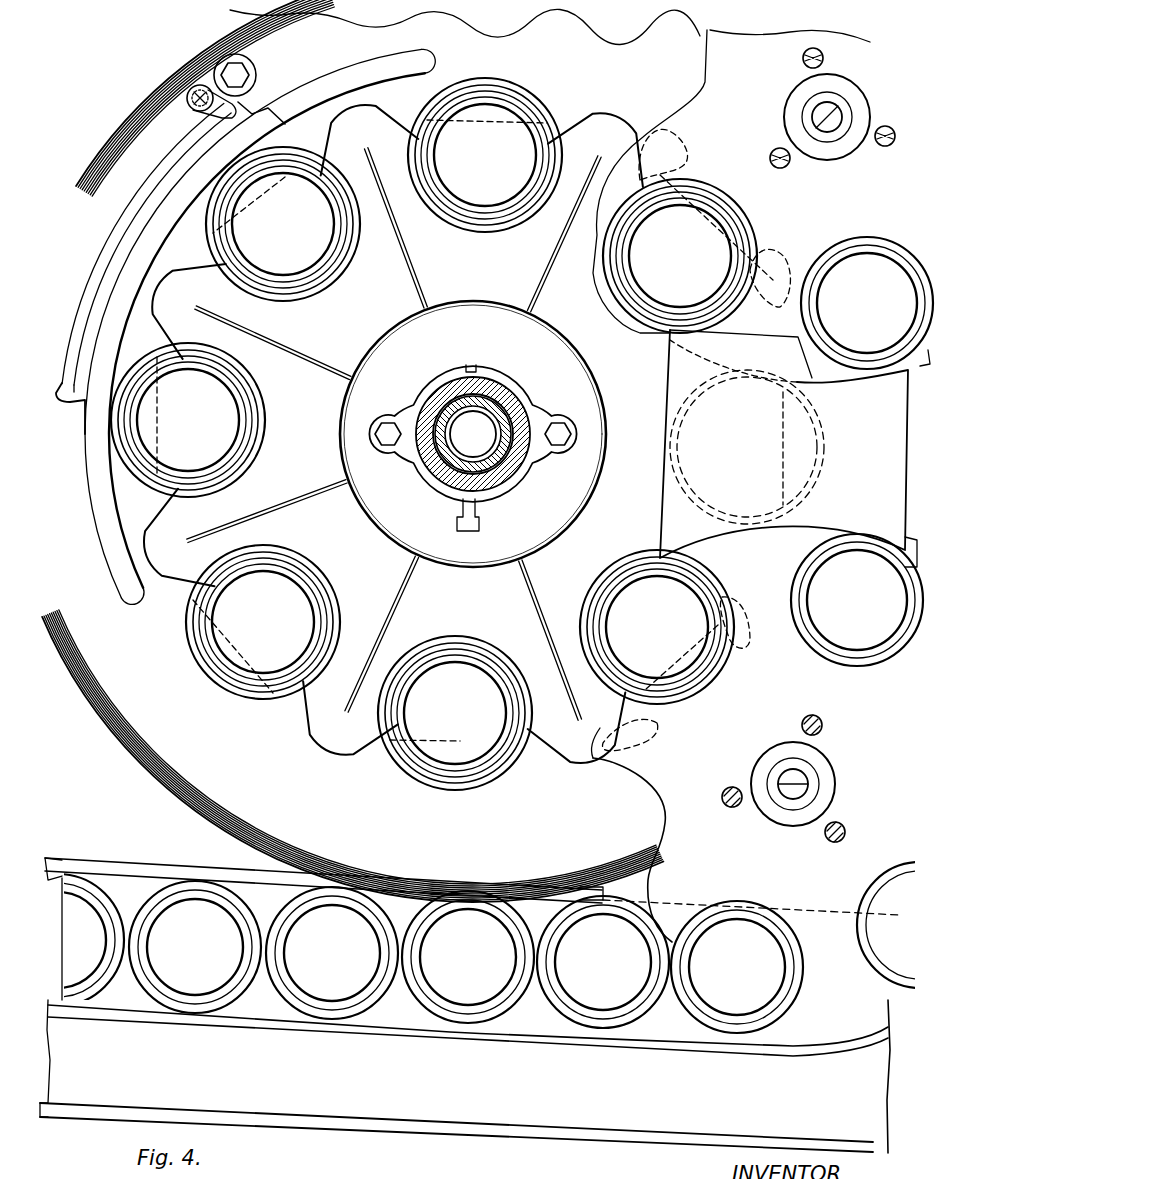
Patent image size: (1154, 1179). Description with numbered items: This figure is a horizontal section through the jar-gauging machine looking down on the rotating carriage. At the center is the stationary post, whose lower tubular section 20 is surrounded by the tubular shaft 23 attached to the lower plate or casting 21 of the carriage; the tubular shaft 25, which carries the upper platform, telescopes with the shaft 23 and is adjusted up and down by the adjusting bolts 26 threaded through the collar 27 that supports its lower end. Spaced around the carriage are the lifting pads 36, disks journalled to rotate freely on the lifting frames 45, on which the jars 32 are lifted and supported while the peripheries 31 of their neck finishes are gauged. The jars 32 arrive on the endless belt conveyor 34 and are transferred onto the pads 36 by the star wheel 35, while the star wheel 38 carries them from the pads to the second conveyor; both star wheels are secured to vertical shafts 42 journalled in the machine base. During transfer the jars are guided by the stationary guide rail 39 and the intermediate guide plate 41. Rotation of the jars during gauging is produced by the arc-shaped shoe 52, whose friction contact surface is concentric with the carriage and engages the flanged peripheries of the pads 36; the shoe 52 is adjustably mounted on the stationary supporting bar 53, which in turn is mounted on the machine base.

The lower tubular section 20 is at (527, 412).
The lower plate or casting 21 is at (267, 30).
The tubular shaft 23 is at (497, 413).
The tubular shaft 25 is at (500, 390).
The adjusting bolts 26 is at (383, 437).
The collar 27 is at (415, 472).
The peripheries 31 is at (217, 217).
The jars 32 is at (222, 200).
The endless belt conveyor 34 is at (489, 1115).
The star wheel 35 is at (643, 760).
The lifting pads 36 is at (273, 150).
The star wheel 38 is at (707, 80).
The guide rail 39 is at (489, 1030).
The guide plate 41 is at (670, 533).
The vertical shafts 42 is at (780, 779).
The lifting frames 45 is at (380, 113).
The arc-shaped shoe 52 is at (147, 243).
The supporting bar 53 is at (153, 125).